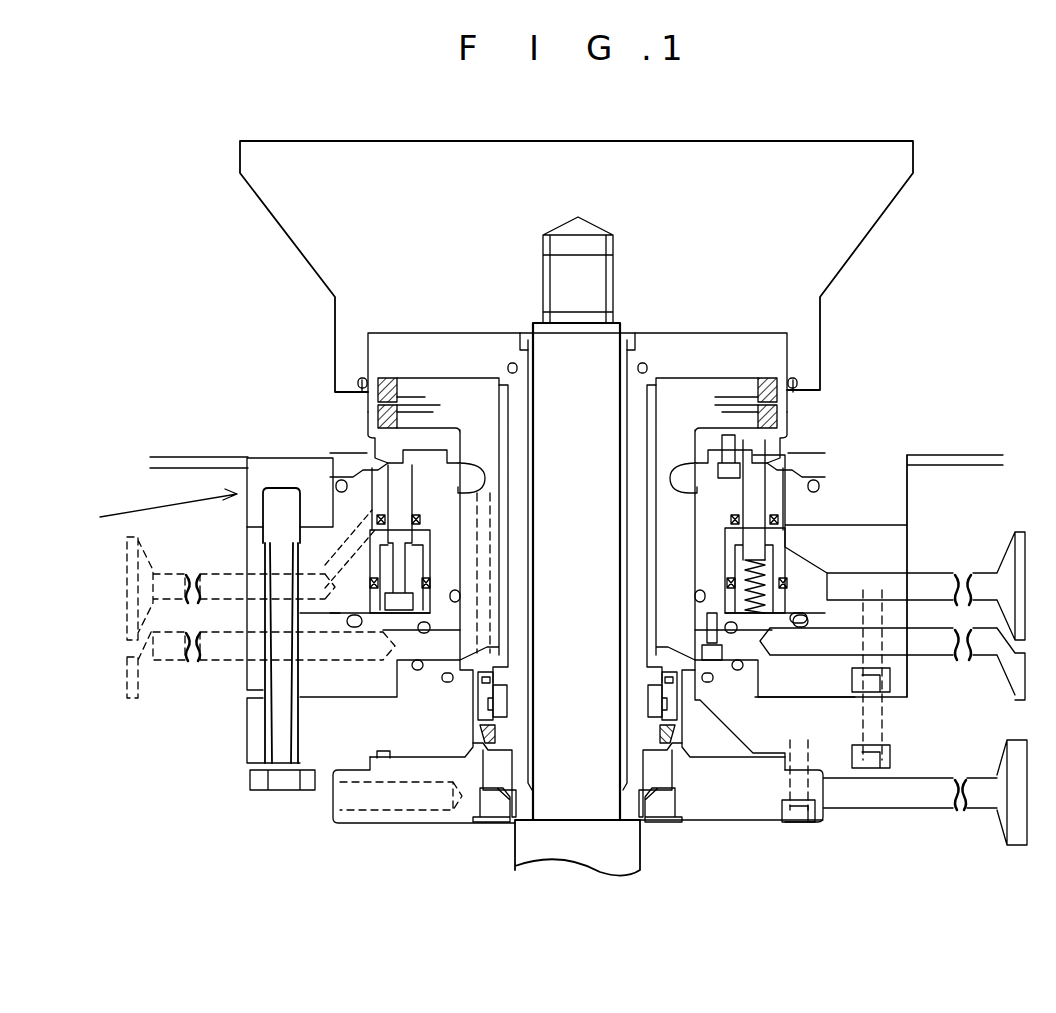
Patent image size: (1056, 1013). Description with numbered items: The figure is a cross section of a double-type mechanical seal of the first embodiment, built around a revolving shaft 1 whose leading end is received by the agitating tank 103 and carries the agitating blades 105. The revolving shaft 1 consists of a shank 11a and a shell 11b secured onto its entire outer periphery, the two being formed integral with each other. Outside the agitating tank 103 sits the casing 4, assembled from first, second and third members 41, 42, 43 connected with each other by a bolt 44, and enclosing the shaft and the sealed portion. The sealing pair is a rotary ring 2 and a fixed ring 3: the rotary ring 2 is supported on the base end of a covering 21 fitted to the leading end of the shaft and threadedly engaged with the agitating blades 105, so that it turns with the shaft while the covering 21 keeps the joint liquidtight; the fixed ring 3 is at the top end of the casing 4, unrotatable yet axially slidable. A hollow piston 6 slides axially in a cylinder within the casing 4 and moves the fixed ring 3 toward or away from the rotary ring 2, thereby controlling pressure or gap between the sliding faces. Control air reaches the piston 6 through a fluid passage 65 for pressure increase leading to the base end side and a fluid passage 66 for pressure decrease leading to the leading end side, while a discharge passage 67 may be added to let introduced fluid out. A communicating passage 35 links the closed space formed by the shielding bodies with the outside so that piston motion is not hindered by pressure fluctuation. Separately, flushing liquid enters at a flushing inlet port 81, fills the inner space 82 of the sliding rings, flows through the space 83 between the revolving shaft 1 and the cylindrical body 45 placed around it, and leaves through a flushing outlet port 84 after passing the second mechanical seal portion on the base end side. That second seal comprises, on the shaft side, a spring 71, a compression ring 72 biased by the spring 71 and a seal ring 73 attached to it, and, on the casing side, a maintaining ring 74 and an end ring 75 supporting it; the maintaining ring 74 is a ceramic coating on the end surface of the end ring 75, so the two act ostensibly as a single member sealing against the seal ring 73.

The revolving shaft 1 is at (775, 820).
The rotary ring 2 is at (387, 380).
The fixed ring 3 is at (380, 417).
The casing 4 is at (156, 513).
The piston 6 is at (767, 560).
The shank 11a is at (580, 803).
The shell 11b is at (635, 758).
The covering 21 is at (723, 348).
The communicating passage 35 is at (337, 507).
The first member 41 is at (247, 482).
The second member 42 is at (257, 678).
The third member 43 is at (250, 737).
The bolt 44 is at (280, 790).
The cylindrical body 45 is at (495, 410).
The fluid passage for pressure increase 65 is at (892, 657).
The fluid passage for pressure decrease 66 is at (887, 573).
The discharge passage 67 is at (325, 573).
The spring 71 is at (470, 700).
The compression ring 72 is at (480, 710).
The seal ring 73 is at (480, 740).
The maintaining ring 74 is at (497, 750).
The end ring 75 is at (468, 808).
The flushing inlet port 81 is at (128, 680).
The inner space 82 is at (463, 407).
The space 83 is at (500, 553).
The flushing outlet port 84 is at (863, 810).
The agitating tank 103 is at (942, 452).
The agitating blades 105 is at (883, 213).